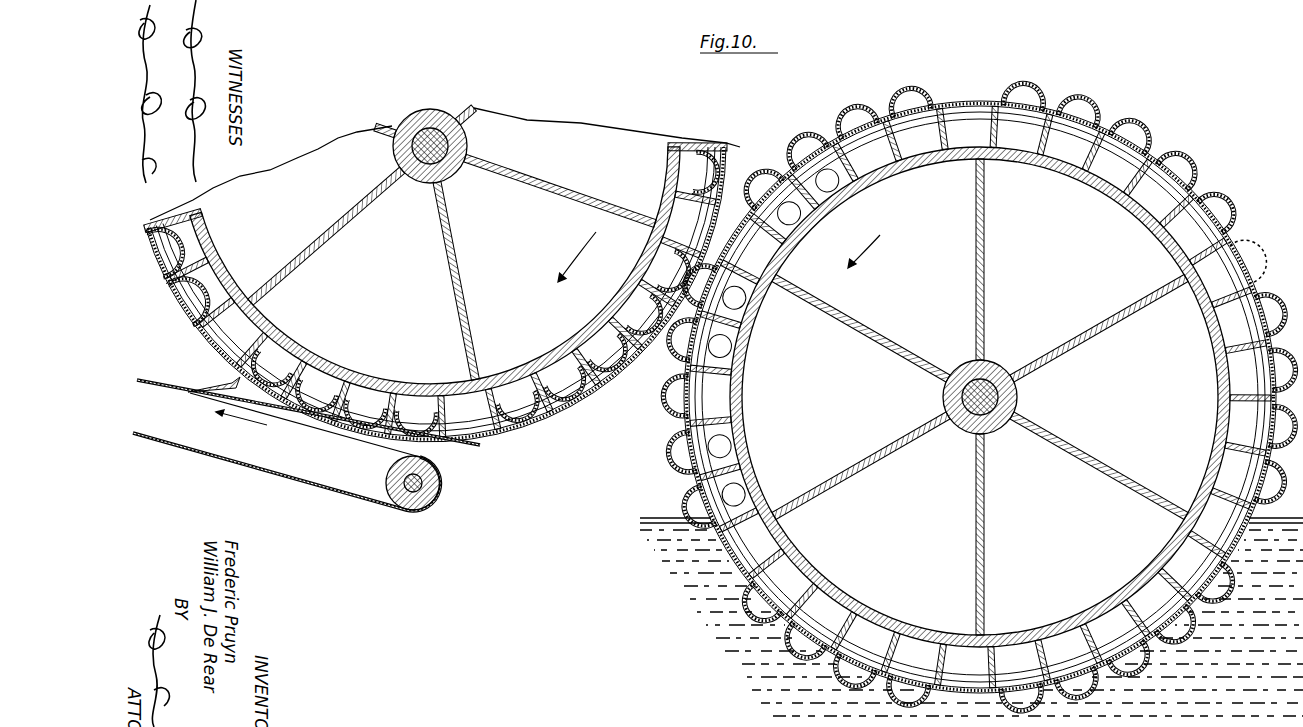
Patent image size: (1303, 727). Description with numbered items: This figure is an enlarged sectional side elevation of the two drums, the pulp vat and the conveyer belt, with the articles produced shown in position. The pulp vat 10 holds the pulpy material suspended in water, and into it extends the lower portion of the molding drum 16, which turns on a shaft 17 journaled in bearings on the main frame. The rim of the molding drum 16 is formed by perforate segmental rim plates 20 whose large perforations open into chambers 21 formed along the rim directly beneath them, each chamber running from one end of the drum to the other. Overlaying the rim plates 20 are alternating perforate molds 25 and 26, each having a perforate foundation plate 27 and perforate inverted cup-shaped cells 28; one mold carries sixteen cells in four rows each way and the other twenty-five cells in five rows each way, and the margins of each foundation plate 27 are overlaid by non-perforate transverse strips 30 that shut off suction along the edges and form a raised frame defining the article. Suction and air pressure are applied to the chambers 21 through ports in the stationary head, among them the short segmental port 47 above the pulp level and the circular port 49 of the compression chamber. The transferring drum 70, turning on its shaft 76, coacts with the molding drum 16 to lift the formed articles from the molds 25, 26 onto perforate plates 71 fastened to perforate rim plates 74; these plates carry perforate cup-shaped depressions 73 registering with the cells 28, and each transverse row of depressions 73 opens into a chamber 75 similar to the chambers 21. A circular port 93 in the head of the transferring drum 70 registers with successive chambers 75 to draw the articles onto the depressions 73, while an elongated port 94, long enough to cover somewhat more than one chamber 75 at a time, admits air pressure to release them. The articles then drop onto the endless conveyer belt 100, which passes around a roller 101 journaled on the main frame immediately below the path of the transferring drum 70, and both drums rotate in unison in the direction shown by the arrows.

The pulp vat 10 is at (655, 560).
The molding drum 16 is at (980, 397).
The shaft 17 is at (988, 422).
The segmental rim plates 20 is at (1112, 170).
The drum chambers 21 is at (882, 160).
The mold 25 is at (797, 397).
The mold 26 is at (672, 462).
The foundation plate 27 is at (686, 436).
The cells 28 is at (1145, 133).
The transverse strips 30 is at (978, 152).
The port 47 is at (1240, 416).
The port 49 is at (742, 292).
The transferring drum 70 is at (445, 164).
The perforate plate 71 is at (162, 280).
The cup-shaped depressions 73 is at (690, 185).
The perforate rim plates 74 is at (435, 289).
The chamber 75 is at (690, 168).
The shaft 76 is at (466, 127).
The port 93 is at (660, 252).
The port 94 is at (278, 348).
The endless conveyer belt 100 is at (318, 488).
The roller 101 is at (420, 506).